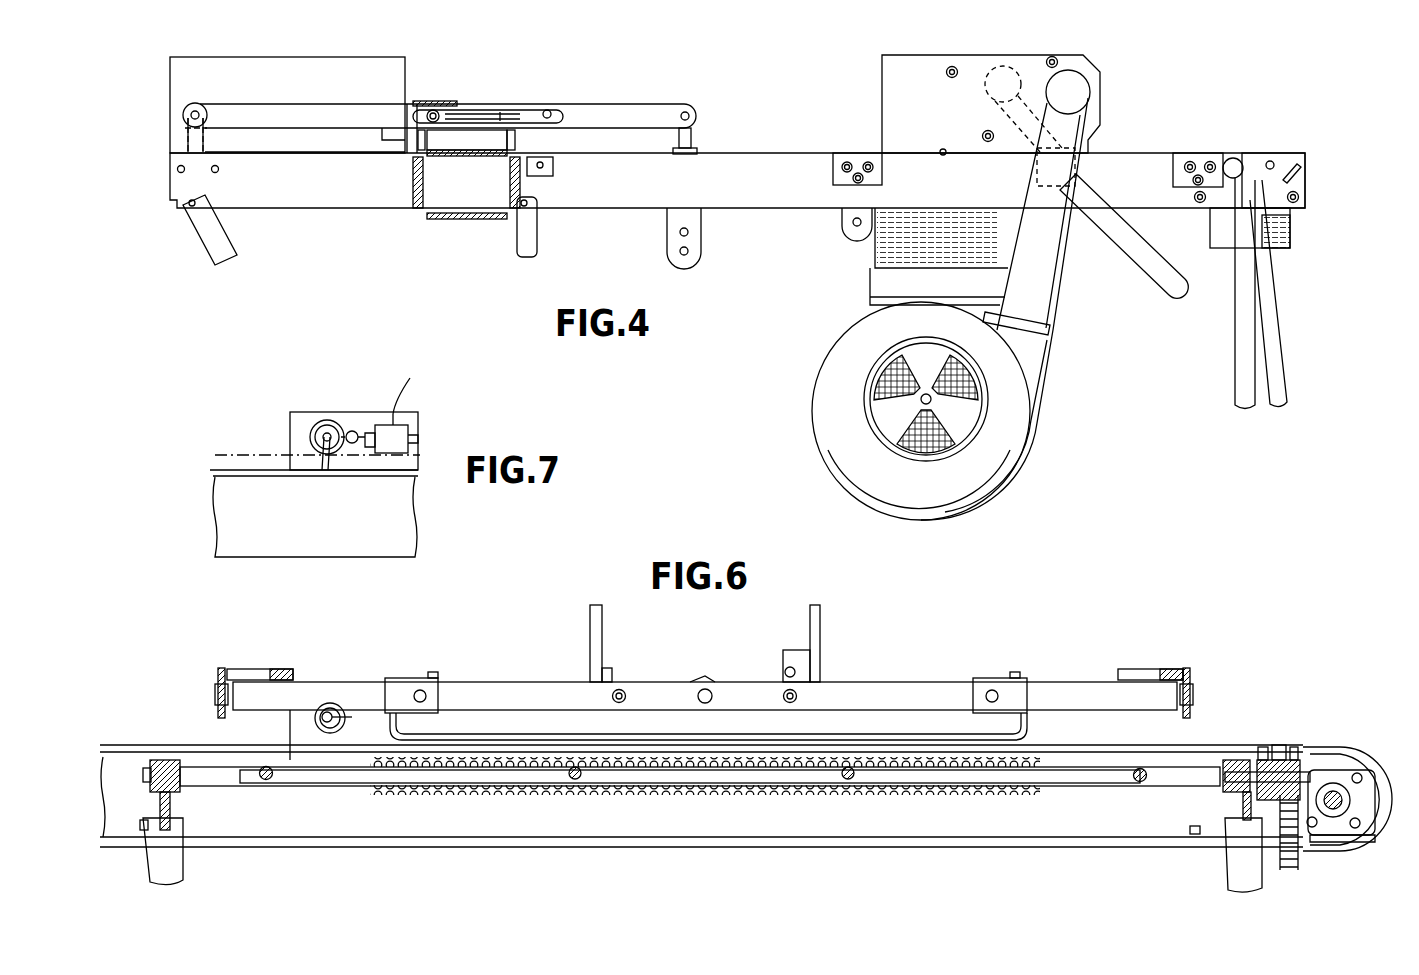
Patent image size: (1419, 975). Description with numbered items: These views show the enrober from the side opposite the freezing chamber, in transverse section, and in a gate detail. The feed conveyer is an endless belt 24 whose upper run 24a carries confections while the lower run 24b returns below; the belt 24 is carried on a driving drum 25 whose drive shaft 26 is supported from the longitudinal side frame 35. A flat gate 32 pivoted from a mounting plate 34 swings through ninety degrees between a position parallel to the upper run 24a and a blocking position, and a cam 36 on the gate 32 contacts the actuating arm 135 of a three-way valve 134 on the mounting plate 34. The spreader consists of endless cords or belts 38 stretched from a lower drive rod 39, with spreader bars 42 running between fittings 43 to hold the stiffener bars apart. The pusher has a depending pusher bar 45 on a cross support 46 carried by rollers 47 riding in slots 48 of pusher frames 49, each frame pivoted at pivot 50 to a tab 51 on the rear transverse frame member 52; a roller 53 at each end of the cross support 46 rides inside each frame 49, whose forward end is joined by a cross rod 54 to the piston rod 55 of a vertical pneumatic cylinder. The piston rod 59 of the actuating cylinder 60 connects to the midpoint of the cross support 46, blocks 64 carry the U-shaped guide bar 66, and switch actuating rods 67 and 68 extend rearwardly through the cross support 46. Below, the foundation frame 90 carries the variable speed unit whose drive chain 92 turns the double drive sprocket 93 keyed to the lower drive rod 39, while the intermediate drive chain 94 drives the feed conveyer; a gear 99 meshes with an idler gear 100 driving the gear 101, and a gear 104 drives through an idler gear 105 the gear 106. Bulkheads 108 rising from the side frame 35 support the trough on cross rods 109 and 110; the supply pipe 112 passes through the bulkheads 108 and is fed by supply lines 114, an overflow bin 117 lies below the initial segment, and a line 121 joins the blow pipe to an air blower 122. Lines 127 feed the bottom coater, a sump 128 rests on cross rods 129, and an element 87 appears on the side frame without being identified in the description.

In FIG. 6, the endless belt 24 is at (1238, 745).
In FIG. 4, the upper run of the feed conveyer belt 24a is at (490, 158).
In FIG. 7, the upper run of the feed conveyer belt 24a is at (210, 470).
In FIG. 4, the lower run of the conveyer belt 24b is at (490, 221).
In FIG. 6, the driving drum 25 is at (1355, 765).
In FIG. 6, the drive shaft 26 is at (1345, 838).
In FIG. 7, the gate 32 is at (327, 455).
In FIG. 6, the gate 32 is at (355, 705).
In FIG. 7, the mounting plate 34 is at (305, 420).
In FIG. 4, the side frame 35 is at (673, 194).
In FIG. 7, the cam 36 is at (335, 425).
In FIG. 6, the endless cords or belts 38 is at (1040, 750).
In FIG. 6, the lower drive rod 39 is at (203, 788).
In FIG. 6, the spreader bars 42 is at (270, 790).
In FIG. 6, the fitting 43 is at (322, 795).
In FIG. 6, the pusher bar 45 is at (520, 700).
In FIG. 6, the cross support 46 is at (922, 700).
In FIG. 4, the rollers 47 is at (437, 110).
In FIG. 6, the rollers 47 is at (214, 693).
In FIG. 4, the slots 48 is at (547, 110).
In FIG. 4, the pusher frames 49 is at (612, 103).
In FIG. 6, the pusher frames 49 is at (218, 672).
In FIG. 4, the pivot 50 is at (190, 113).
In FIG. 4, the tab 51 is at (187, 131).
In FIG. 4, the rear enrober transverse frame member 52 is at (170, 187).
In FIG. 4, the roller 53 is at (418, 101).
In FIG. 6, the roller 53 is at (292, 672).
In FIG. 4, the cross rod 54 is at (686, 111).
In FIG. 4, the piston rod 55 is at (692, 140).
In FIG. 6, the piston rod 59 is at (698, 690).
In FIG. 6, the actuating cylinder 60 is at (710, 688).
In FIG. 6, the block 64 is at (410, 685).
In FIG. 6, the guide bar 66 is at (568, 700).
In FIG. 6, the switch actuating rod 67 is at (783, 694).
In FIG. 6, the switch actuating rod 68 is at (625, 690).
In FIG. 4, the pin 87 is at (1294, 162).
In FIG. 4, the foundation frame 90 is at (228, 245).
In FIG. 6, the endless drive chain 92 is at (1300, 862).
In FIG. 6, the double drive sprocket 93 is at (1295, 760).
In FIG. 6, the intermediate drive chain 94 is at (1272, 745).
In FIG. 4, the gear 99 is at (847, 162).
In FIG. 4, the idler gear 100 is at (855, 184).
In FIG. 4, the gear 101 is at (868, 162).
In FIG. 4, the gear 104 is at (1188, 162).
In FIG. 4, the idler gear 105 is at (1195, 186).
In FIG. 4, the gear 106 is at (1212, 162).
In FIG. 4, the bulkheads 108 is at (898, 131).
In FIG. 4, the cross rod 109 is at (1058, 62).
In FIG. 4, the rear cross rod 110 is at (948, 76).
In FIG. 4, the supply pipe 112 is at (990, 94).
In FIG. 4, the supply line 114 is at (1150, 270).
In FIG. 4, the overflow bin 117 is at (980, 247).
In FIG. 4, the line 121 is at (1078, 92).
In FIG. 4, the air blower 122 is at (1005, 445).
In FIG. 4, the lines 127 is at (1276, 348).
In FIG. 4, the sump 128 is at (1280, 226).
In FIG. 4, the cross rods 129 is at (1200, 204).
In FIG. 7, the three-way valve 134 is at (395, 430).
In FIG. 7, the actuating arm 135 is at (358, 445).